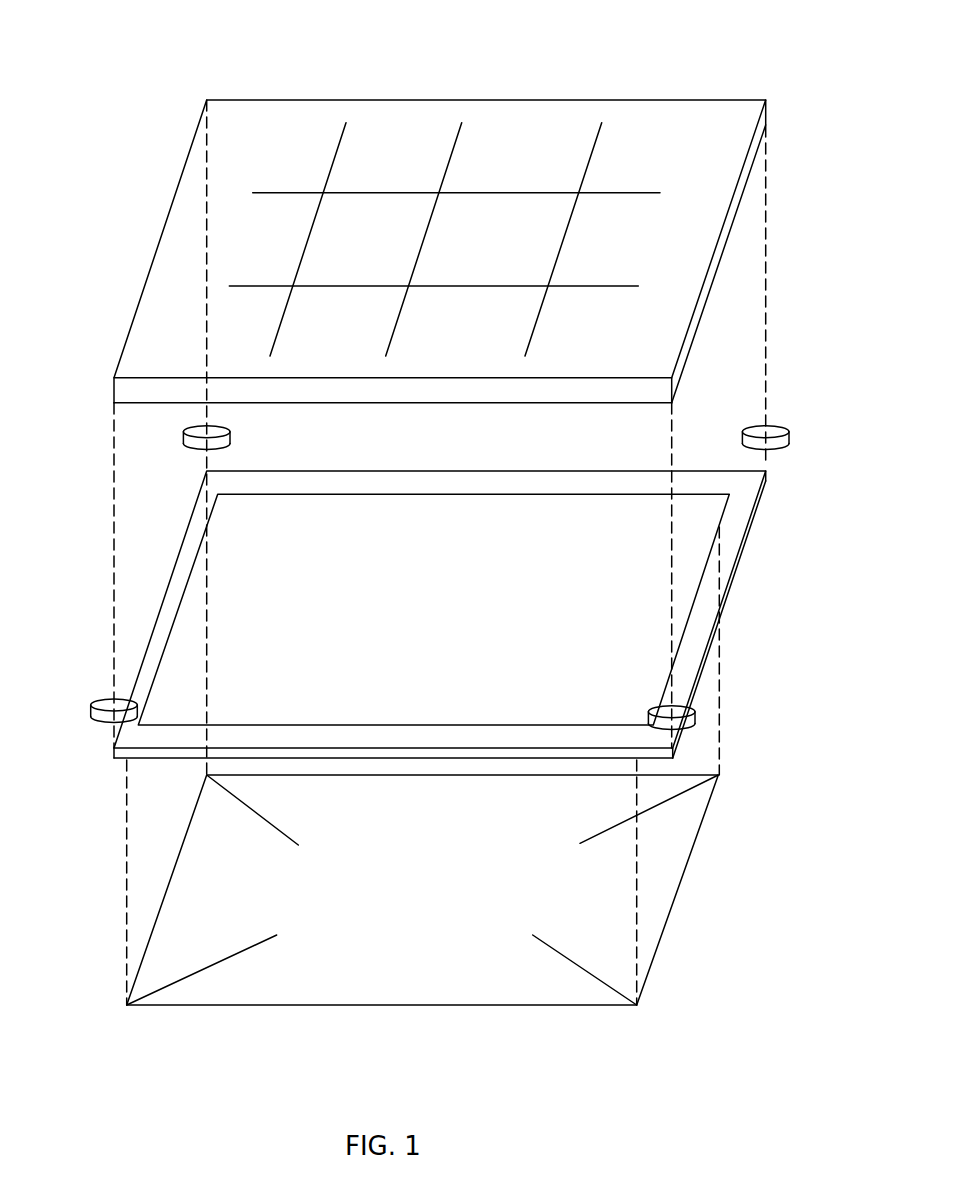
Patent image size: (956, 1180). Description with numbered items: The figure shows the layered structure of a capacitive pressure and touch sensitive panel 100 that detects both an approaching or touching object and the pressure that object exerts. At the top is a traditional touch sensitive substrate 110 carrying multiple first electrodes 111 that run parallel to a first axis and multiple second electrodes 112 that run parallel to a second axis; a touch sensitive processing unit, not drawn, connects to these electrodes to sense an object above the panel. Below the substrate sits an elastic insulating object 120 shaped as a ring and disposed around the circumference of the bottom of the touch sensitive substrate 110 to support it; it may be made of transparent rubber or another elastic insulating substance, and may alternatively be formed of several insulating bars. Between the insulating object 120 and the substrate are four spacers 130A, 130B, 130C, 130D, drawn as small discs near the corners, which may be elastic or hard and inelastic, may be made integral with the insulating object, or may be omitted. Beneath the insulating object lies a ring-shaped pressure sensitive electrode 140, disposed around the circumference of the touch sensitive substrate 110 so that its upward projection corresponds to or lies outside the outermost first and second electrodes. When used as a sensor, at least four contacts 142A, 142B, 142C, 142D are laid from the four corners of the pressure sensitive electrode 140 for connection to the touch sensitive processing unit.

The capacitive pressure and touch sensitive panel 100 is at (127, 77).
The touch sensitive substrate 110 is at (580, 100).
The first electrodes 111 is at (337, 147).
The second electrodes 112 is at (508, 285).
The elastic insulating object 120 is at (299, 725).
The spacer 130A is at (90, 718).
The spacer 130B is at (185, 443).
The spacer 130C is at (788, 432).
The spacer 130D is at (693, 722).
The pressure sensitive electrode 140 is at (387, 1005).
The contact 142A is at (228, 958).
The contact 142B is at (263, 817).
The contact 142C is at (639, 809).
The contact 142D is at (565, 958).